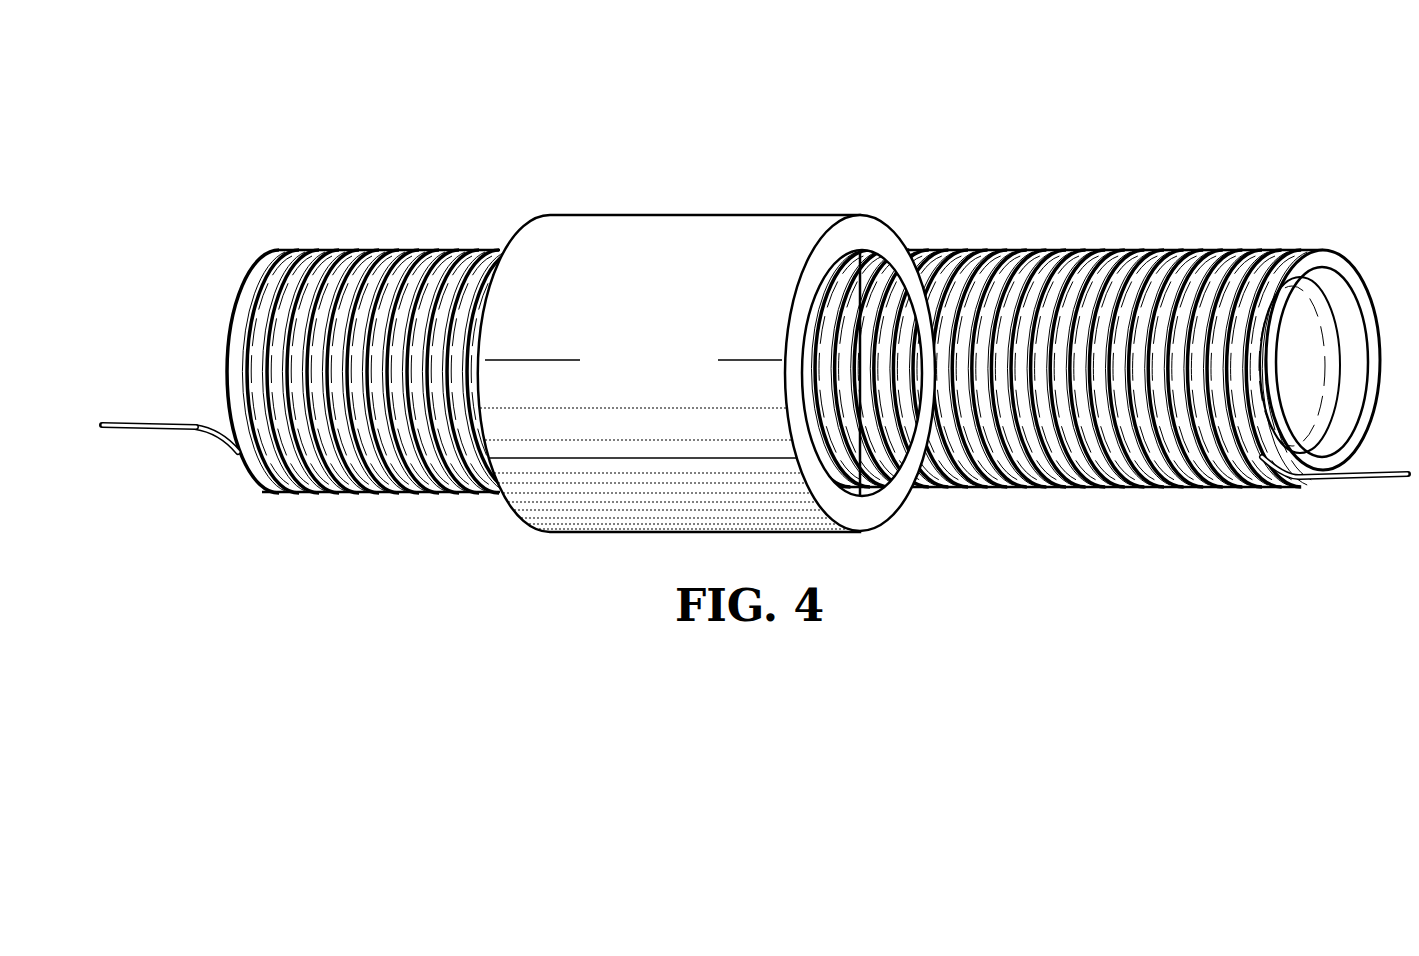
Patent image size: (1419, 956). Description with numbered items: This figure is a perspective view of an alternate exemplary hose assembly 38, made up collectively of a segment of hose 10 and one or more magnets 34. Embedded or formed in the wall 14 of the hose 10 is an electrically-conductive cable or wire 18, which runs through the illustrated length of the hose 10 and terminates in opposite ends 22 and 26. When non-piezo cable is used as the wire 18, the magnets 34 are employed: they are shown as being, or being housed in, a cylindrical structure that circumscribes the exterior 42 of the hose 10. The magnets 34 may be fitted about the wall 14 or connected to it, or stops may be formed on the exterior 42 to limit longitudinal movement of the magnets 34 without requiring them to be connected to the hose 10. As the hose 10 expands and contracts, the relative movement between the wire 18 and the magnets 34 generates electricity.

The hose 10 is at (1093, 184).
The wall 14 is at (413, 249).
The wire 18 is at (207, 424).
The end 22 is at (1325, 488).
The end 26 is at (161, 432).
The magnets 34 is at (704, 225).
The assembly 38 is at (679, 101).
The exterior 42 is at (437, 495).